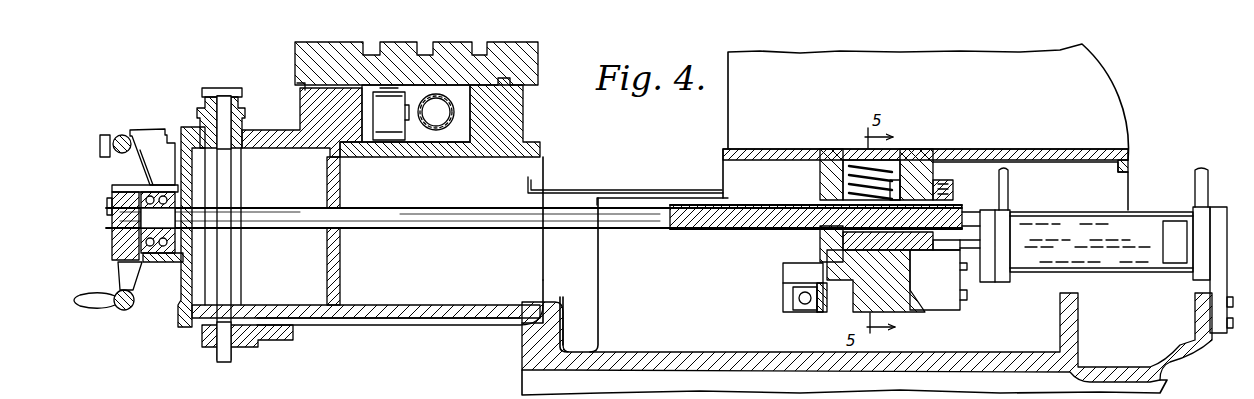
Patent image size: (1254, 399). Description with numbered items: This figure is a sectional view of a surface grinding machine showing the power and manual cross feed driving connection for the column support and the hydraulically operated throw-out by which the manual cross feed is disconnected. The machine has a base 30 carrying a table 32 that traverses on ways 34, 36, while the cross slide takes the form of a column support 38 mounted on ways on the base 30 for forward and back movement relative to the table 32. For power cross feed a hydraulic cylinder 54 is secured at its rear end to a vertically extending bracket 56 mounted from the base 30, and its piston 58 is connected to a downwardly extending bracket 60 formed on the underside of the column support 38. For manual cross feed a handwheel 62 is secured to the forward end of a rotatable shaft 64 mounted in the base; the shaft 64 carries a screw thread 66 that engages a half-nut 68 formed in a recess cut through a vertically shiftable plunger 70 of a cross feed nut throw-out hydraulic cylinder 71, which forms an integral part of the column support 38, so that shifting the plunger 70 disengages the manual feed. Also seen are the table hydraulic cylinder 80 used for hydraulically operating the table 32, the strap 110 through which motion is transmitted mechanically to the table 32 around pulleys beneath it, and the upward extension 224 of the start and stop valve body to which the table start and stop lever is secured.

The base 30 is at (521, 378).
The table 32 is at (405, 50).
The way 34 is at (302, 98).
The way 36 is at (503, 105).
The column support 38 is at (957, 50).
The hydraulic cylinder 54 is at (1081, 225).
The vertically extending bracket 56 is at (1217, 282).
The piston 58 is at (1033, 274).
The downwardly extending bracket 60 is at (921, 176).
The handwheel 62 is at (115, 258).
The rotatable shaft 64 is at (283, 222).
The screw thread 66 is at (730, 226).
The half-nut 68 is at (845, 155).
The vertically shiftable plunger 70 is at (912, 170).
The cross feed nut throw-out hydraulic cylinder 71 is at (820, 255).
The table hydraulic cylinder 80 is at (446, 132).
The strap 110 is at (393, 142).
The upward extension 224 is at (228, 190).